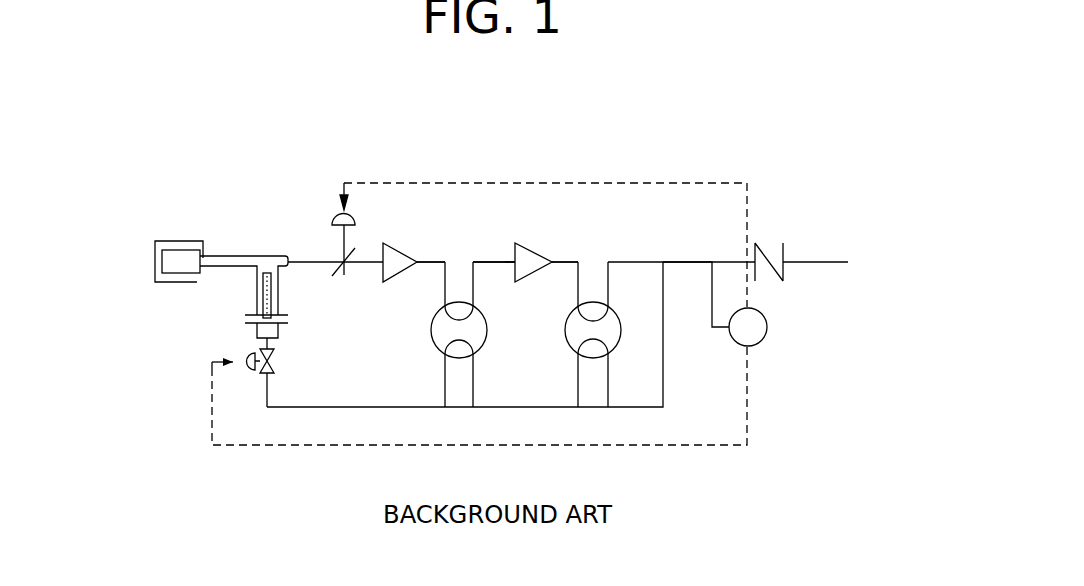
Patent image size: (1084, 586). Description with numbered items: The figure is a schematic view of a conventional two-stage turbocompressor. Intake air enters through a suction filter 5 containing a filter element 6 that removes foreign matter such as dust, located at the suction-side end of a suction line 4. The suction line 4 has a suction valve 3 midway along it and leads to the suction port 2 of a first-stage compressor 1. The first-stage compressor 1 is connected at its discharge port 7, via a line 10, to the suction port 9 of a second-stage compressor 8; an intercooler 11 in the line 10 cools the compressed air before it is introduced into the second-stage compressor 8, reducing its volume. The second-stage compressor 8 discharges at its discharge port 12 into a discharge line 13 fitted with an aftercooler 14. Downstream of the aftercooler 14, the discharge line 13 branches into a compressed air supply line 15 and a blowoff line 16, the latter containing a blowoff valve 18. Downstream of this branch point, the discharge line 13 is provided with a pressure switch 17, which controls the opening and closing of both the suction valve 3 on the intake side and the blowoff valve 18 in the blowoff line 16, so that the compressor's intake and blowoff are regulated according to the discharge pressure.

The first-stage compressor 1 is at (398, 239).
The suction port 2 is at (382, 256).
The suction valve 3 is at (347, 280).
The suction line 4 is at (364, 268).
The suction filter 5 is at (163, 296).
The filter element 6 is at (180, 266).
The discharge port 7 is at (418, 261).
The second-stage compressor 8 is at (531, 242).
The suction port 9 is at (514, 260).
The line 10 is at (483, 260).
The intercooler 11 is at (428, 340).
The discharge port 12 is at (556, 259).
The discharge line 13 is at (691, 260).
The aftercooler 14 is at (566, 350).
The compressed air supply line 15 is at (822, 260).
The blowoff line 16 is at (353, 406).
The pressure switch 17 is at (770, 327).
The blowoff valve 18 is at (242, 346).